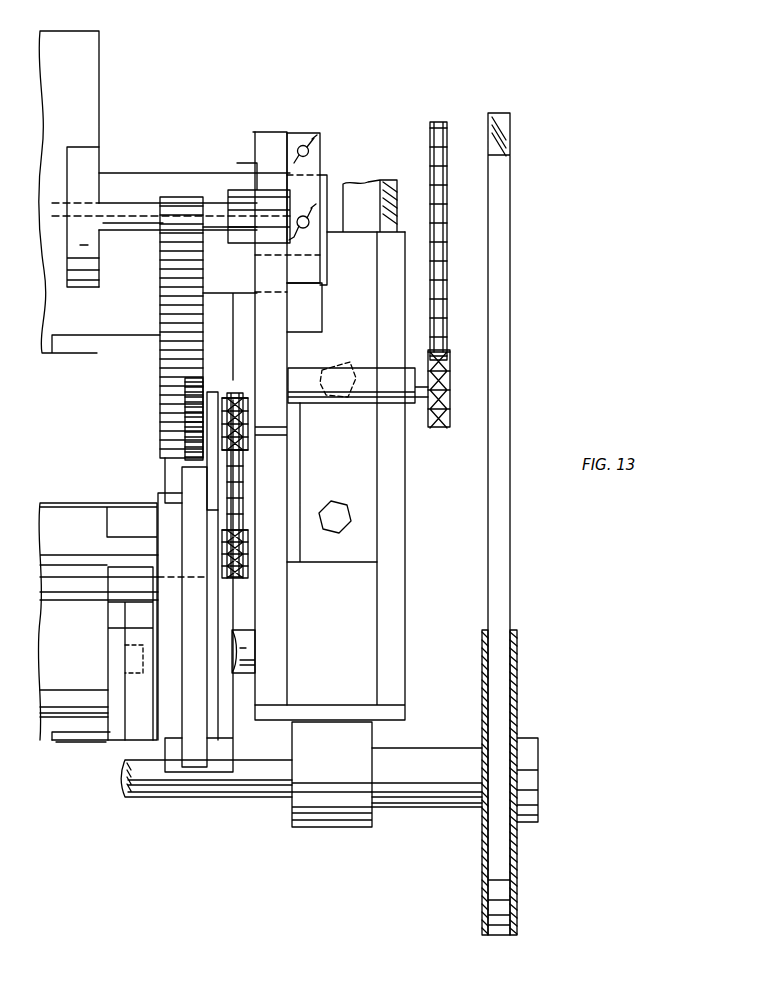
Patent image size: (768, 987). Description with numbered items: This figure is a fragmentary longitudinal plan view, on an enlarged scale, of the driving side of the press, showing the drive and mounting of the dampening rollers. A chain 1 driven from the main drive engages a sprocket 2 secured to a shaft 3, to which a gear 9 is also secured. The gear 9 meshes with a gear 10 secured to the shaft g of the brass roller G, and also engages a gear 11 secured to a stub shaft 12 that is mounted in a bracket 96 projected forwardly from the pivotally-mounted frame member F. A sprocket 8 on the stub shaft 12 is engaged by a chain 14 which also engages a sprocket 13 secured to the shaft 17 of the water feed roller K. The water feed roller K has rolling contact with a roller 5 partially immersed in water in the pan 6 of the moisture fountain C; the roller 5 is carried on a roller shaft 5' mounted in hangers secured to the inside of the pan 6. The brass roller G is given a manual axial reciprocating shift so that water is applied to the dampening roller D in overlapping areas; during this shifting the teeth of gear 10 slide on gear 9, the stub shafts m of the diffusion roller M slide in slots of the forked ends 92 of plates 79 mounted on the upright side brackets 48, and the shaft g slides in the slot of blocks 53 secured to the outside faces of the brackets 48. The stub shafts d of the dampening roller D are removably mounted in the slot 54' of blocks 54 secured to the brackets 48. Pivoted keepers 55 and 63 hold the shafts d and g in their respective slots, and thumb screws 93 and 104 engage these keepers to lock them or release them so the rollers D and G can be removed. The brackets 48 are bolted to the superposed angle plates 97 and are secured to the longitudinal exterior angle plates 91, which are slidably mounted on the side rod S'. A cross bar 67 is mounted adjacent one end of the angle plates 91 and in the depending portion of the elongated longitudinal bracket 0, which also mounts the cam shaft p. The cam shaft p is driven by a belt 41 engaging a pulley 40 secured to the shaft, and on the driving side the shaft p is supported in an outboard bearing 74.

The dampening roller D is at (92, 110).
The diffusion roller M is at (92, 160).
The brass roller G is at (80, 328).
The stub shaft of the diffusion roller m is at (147, 232).
The stub shaft of the dampening roller d is at (178, 184).
The gear 10 is at (158, 316).
The gear 9 is at (162, 410).
The gear 11 is at (190, 430).
The forked ends of plates 92 is at (237, 183).
The blocks 54 is at (272, 173).
The slot 54' is at (248, 151).
The pivoted keeper 55 is at (315, 165).
The thumb screw 93 is at (313, 141).
The thumb screw 104 is at (318, 222).
The pivoted keeper 63 is at (324, 240).
The shaft of the brass roller g is at (326, 275).
The blocks 53 is at (318, 308).
The upright side brackets 48 is at (270, 425).
The longitudinal side rod S' is at (366, 190).
The longitudinal exterior angle plates 91 is at (390, 655).
The plates 79 is at (284, 350).
The shaft 3 is at (240, 390).
The stub shaft 12 is at (225, 395).
The superposed angle plates 97 is at (352, 558).
The chain 1 is at (448, 313).
The sprocket 2 is at (452, 392).
The belt 41 is at (512, 552).
The pulley 40 is at (512, 860).
The cam shaft p is at (200, 786).
The outboard bearing 74 is at (328, 814).
The elongated longitudinal bracket 0 is at (226, 745).
The pivotally-mounted frame member F is at (193, 643).
The bracket 96 is at (215, 465).
The shaft 17 is at (213, 553).
The sprocket 8 is at (248, 420).
The chain 14 is at (243, 524).
The sprocket 13 is at (248, 575).
The cross bar 67 is at (248, 640).
The water feed roller K is at (87, 508).
The roller 5 is at (123, 675).
The roller shaft 5' is at (109, 659).
The water pan 6 is at (82, 742).
The moisture fountain C is at (62, 742).